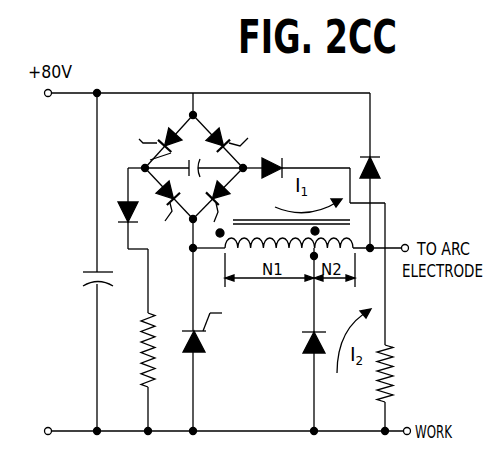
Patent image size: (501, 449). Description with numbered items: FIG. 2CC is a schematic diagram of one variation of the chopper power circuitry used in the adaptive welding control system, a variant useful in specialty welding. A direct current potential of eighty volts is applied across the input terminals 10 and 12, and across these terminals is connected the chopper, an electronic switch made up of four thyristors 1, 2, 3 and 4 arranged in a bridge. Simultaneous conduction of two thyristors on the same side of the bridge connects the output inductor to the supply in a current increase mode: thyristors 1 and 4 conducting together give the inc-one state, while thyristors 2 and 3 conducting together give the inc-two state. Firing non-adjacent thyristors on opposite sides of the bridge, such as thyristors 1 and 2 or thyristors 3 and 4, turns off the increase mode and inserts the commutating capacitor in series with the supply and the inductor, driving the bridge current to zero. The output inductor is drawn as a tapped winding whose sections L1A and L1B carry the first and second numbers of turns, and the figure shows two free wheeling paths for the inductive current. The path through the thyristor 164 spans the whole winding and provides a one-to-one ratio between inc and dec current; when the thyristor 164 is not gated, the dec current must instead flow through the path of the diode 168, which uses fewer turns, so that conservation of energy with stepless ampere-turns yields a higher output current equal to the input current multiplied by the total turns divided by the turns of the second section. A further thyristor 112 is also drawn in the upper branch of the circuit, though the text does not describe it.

The input terminal 10 is at (48, 97).
The input terminal 12 is at (46, 428).
The thyristor 1 is at (160, 135).
The thyristor 2 is at (226, 194).
The thyristor 3 is at (236, 127).
The thyristor 4 is at (160, 193).
The thyristor 112 is at (380, 169).
The thyristor 164 is at (202, 340).
The diode 168 is at (310, 348).
The inductor winding section N1 L1A is at (262, 252).
The inductor winding section N2 L1B is at (344, 250).